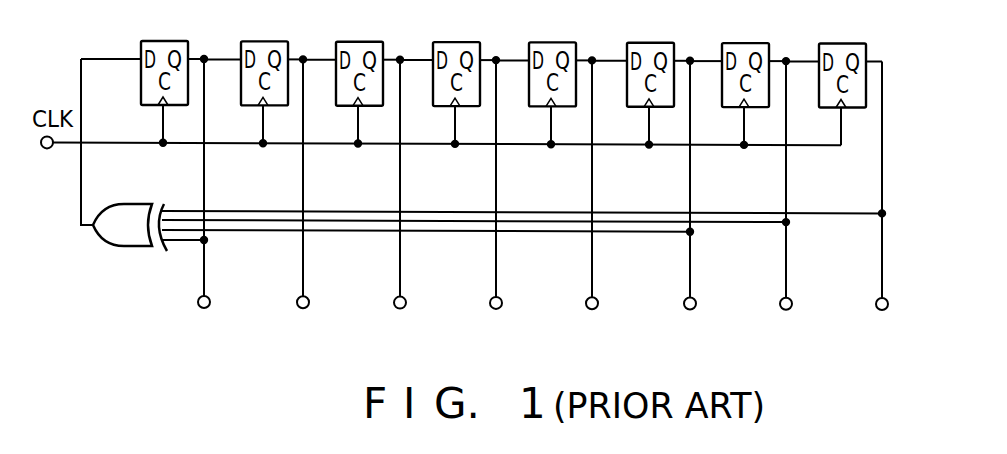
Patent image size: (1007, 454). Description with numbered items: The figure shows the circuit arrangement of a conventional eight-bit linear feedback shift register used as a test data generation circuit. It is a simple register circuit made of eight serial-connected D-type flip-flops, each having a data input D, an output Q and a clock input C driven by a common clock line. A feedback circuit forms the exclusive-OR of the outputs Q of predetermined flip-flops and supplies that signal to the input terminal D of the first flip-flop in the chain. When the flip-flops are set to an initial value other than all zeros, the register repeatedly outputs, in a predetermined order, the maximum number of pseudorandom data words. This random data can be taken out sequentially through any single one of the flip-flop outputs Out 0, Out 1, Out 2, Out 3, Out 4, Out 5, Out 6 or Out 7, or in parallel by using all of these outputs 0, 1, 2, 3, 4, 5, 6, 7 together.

The output Out 0 is at (206, 200).
The output Out 1 is at (304, 200).
The output Out 2 is at (401, 201).
The output Out 3 is at (497, 201).
The output Out 4 is at (593, 201).
The output Out 5 is at (690, 202).
The output Out 6 is at (786, 202).
The output Out 7 is at (880, 203).